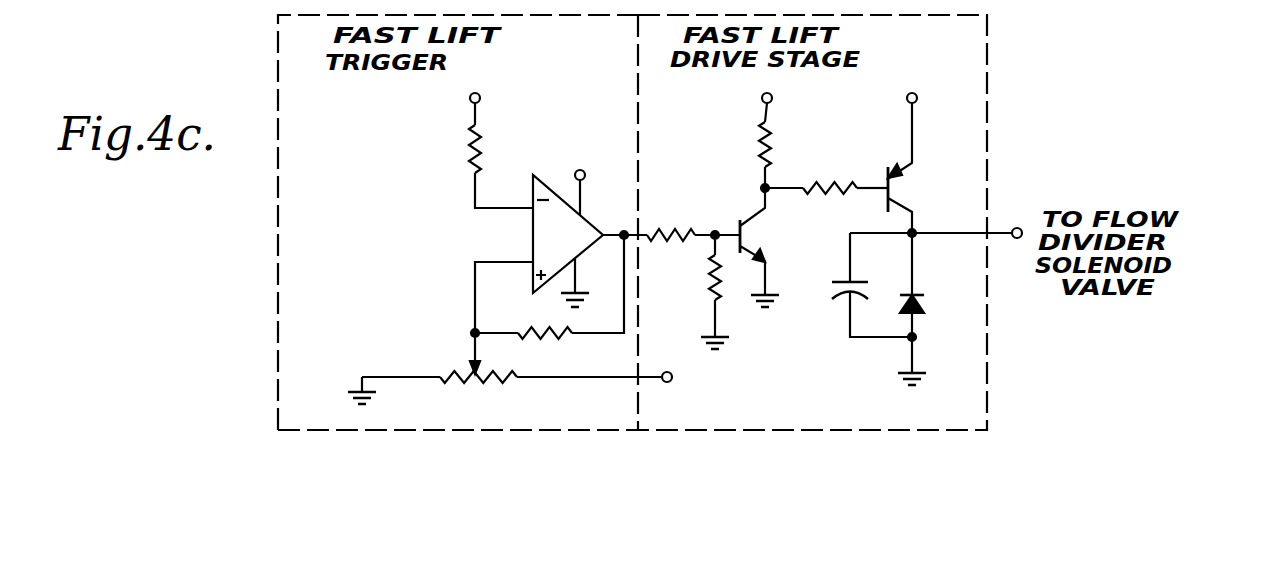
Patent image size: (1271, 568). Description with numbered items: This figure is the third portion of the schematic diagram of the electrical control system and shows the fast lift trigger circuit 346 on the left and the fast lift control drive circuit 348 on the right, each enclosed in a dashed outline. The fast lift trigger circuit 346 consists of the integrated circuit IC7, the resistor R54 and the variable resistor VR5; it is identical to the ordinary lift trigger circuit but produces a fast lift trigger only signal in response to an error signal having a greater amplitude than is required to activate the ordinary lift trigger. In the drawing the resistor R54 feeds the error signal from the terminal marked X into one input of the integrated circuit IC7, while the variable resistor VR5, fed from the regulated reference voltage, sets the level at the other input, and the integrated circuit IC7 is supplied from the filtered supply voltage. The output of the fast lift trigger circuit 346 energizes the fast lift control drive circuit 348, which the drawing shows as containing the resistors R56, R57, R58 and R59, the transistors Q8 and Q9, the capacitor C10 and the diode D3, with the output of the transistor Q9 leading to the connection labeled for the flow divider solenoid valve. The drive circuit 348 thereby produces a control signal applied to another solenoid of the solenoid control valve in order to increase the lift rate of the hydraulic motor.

The fast lift trigger circuit 346 is at (332, 118).
The fast lift control drive circuit 348 is at (840, 416).
The resistor R54 is at (470, 143).
The resistor R56 is at (693, 224).
The resistor R57 is at (708, 287).
The resistor R58 is at (759, 131).
The resistor R59 is at (826, 176).
The variable resistor VR5 is at (531, 386).
The integrated circuit IC7 is at (578, 223).
The transistor Q8 is at (772, 247).
The transistor Q9 is at (926, 153).
The capacitor C10 is at (842, 288).
The diode D3 is at (923, 300).